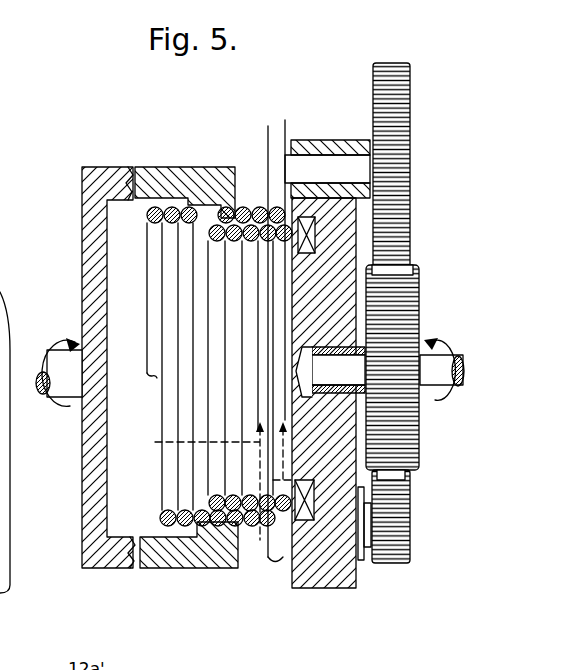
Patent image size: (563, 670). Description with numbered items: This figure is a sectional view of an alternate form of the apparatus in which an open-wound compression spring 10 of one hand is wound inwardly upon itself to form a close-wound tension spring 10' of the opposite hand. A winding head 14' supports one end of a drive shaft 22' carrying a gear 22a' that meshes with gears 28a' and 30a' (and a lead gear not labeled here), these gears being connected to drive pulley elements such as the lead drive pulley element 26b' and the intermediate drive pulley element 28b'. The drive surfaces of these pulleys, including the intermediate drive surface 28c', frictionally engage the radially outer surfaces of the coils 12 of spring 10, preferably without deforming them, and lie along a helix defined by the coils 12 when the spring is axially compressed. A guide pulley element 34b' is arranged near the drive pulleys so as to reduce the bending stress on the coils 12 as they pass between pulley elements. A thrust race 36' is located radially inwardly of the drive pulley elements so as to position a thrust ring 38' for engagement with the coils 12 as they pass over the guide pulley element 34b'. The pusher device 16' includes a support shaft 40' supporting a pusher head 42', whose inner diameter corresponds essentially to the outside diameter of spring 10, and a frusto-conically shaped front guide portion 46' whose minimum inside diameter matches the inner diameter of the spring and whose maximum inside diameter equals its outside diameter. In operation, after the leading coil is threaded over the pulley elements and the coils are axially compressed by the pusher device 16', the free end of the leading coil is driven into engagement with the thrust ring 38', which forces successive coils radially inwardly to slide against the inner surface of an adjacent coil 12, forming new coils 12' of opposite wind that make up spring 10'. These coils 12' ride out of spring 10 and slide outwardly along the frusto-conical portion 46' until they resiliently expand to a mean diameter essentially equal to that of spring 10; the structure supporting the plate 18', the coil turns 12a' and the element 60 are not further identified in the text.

The compression spring 10 is at (162, 371).
The tension spring 10' is at (94, 502).
The coils 12 is at (202, 323).
The new coils 12' is at (202, 366).
The spring coil turns 12a' is at (193, 366).
The winding head 14' is at (222, 476).
The pusher device 16' is at (158, 334).
The support plate 18' is at (328, 400).
The drive shaft 22' is at (380, 350).
The gear 22a' is at (414, 384).
The drive pulley element 26b' is at (202, 481).
The gear 28a' is at (399, 140).
The drive pulley element 28b' is at (309, 246).
The drive surface 28c' is at (243, 320).
The gear 30a' is at (414, 538).
The guide pulley element 34b' is at (275, 350).
The thrust race 36' is at (315, 528).
The thrust ring 38' is at (313, 259).
The support shaft 40' is at (53, 350).
The pusher head 42' is at (189, 570).
The front guide portion 46' is at (161, 492).
The element 60 is at (189, 664).